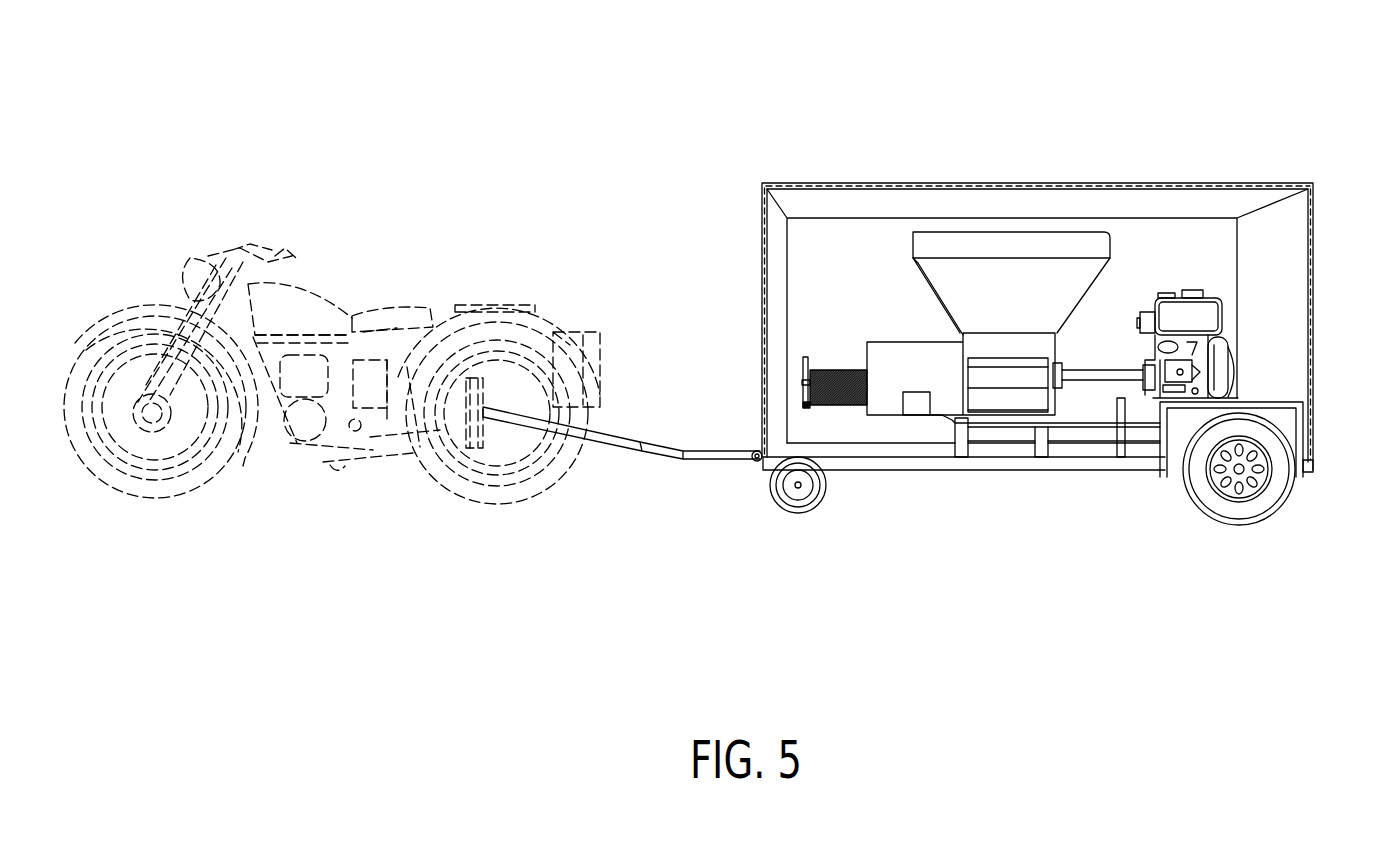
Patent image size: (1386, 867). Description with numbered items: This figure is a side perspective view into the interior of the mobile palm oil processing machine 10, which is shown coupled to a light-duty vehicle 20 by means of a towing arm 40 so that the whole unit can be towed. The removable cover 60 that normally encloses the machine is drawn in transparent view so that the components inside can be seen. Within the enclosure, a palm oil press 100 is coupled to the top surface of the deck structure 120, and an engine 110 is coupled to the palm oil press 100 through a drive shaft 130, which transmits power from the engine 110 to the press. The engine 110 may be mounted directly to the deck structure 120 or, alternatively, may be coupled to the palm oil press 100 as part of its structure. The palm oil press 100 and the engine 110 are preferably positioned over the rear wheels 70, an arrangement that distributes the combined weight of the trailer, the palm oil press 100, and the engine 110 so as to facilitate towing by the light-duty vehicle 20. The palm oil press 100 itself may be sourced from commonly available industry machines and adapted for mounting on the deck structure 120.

The mobile palm oil processing machine 10 is at (1073, 65).
The light-duty vehicle 20 is at (400, 305).
The towing arm 40 is at (660, 456).
The removable cover 60 is at (1068, 183).
The rear wheels 70 is at (1213, 503).
The palm oil press 100 is at (994, 243).
The engine 110 is at (1226, 302).
The deck structure 120 is at (912, 468).
The drive shaft 130 is at (1110, 378).